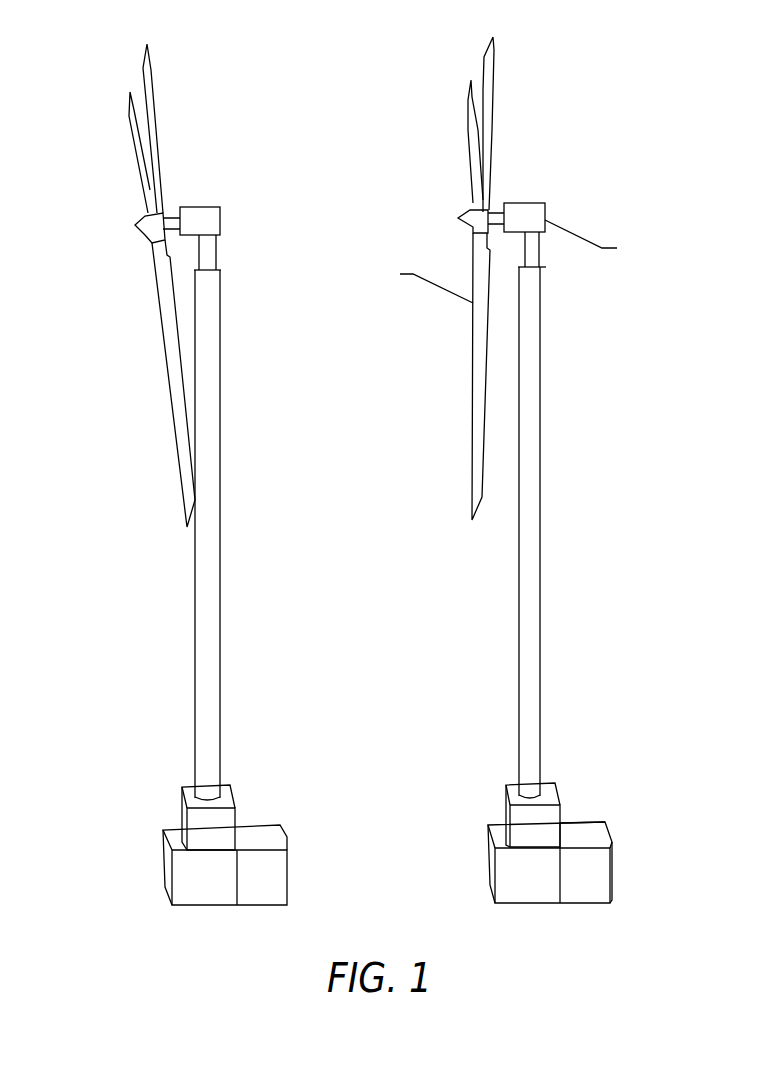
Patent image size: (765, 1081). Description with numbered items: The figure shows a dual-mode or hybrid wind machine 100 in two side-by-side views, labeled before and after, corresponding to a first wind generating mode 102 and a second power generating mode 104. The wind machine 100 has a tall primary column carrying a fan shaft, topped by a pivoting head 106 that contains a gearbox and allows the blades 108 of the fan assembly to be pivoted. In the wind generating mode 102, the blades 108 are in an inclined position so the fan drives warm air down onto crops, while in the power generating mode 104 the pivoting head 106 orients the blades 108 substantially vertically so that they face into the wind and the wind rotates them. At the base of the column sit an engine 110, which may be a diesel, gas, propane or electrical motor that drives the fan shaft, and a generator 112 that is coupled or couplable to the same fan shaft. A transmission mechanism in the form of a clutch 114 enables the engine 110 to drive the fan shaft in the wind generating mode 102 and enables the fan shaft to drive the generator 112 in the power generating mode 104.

The wind machine 100 is at (220, 535).
The wind generating mode 102 is at (238, 97).
The power generating mode 104 is at (562, 95).
The pivoting head 106 is at (200, 207).
The blades 108 is at (155, 128).
The engine 110 is at (493, 850).
The generator 112 is at (590, 828).
The clutch 114 is at (506, 802).